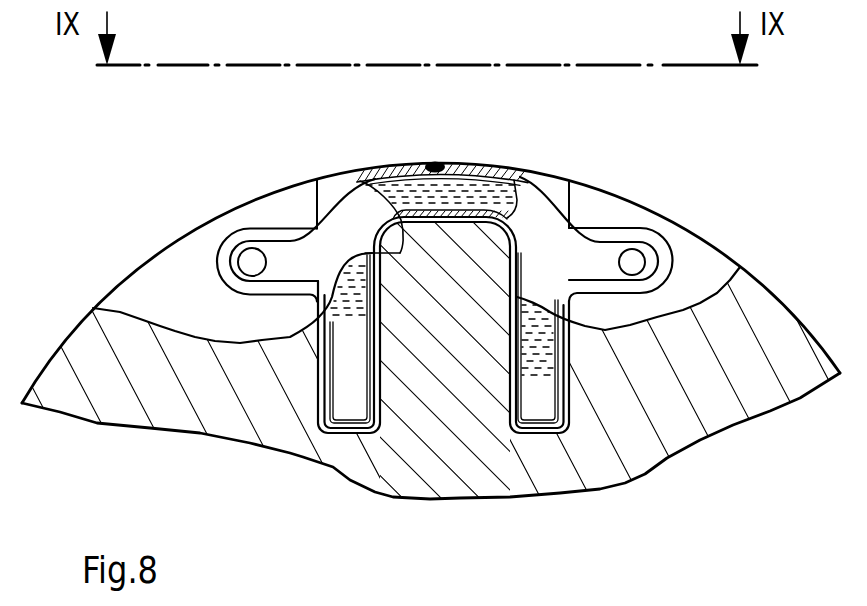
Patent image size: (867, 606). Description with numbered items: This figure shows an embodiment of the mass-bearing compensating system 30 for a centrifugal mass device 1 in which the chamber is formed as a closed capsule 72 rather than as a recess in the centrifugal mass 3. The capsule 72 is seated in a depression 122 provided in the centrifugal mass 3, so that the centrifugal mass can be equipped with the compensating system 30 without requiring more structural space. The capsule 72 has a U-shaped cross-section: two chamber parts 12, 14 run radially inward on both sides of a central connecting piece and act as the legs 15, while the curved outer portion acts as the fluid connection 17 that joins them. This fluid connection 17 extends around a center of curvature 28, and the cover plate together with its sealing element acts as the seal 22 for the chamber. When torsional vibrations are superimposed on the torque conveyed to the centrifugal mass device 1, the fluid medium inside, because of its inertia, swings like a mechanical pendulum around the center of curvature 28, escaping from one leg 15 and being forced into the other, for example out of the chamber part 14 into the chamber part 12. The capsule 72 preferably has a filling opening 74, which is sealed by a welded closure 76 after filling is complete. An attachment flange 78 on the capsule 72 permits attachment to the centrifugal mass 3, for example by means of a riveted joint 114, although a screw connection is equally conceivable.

The centrifugal mass device 1 is at (182, 420).
The centrifugal mass 3 is at (250, 432).
The chamber part 12 is at (355, 427).
The chamber part 14 is at (549, 426).
The leg 15 is at (336, 425).
The fluid connection 17 is at (505, 173).
The seal 22 is at (452, 148).
The center of curvature 28 is at (497, 277).
The mass-bearing compensating system 30 is at (604, 254).
The capsule 72 is at (356, 207).
The filling opening 74 is at (428, 166).
The welded closure 76 is at (433, 162).
The attachment flange 78 is at (277, 268).
The riveted joint 114 is at (247, 257).
The depression 122 is at (528, 178).